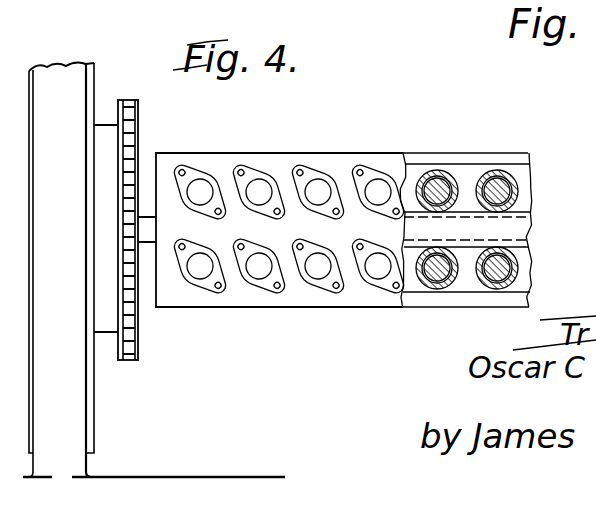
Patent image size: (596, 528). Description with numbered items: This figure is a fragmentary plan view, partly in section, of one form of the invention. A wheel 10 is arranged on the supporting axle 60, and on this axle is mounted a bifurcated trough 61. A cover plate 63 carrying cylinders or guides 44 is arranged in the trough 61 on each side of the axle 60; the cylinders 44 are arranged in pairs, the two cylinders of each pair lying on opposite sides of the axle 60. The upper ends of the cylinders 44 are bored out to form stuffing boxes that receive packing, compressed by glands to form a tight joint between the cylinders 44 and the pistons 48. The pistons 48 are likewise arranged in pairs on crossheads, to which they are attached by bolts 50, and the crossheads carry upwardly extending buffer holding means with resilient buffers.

The wheel 10 is at (70, 434).
The cylinder 44 is at (451, 172).
The piston 48 is at (511, 185).
The bolt 50 is at (595, 50).
The supporting axle 60 is at (147, 242).
The bifurcated trough 61 is at (458, 306).
The cover plate 63 is at (335, 160).